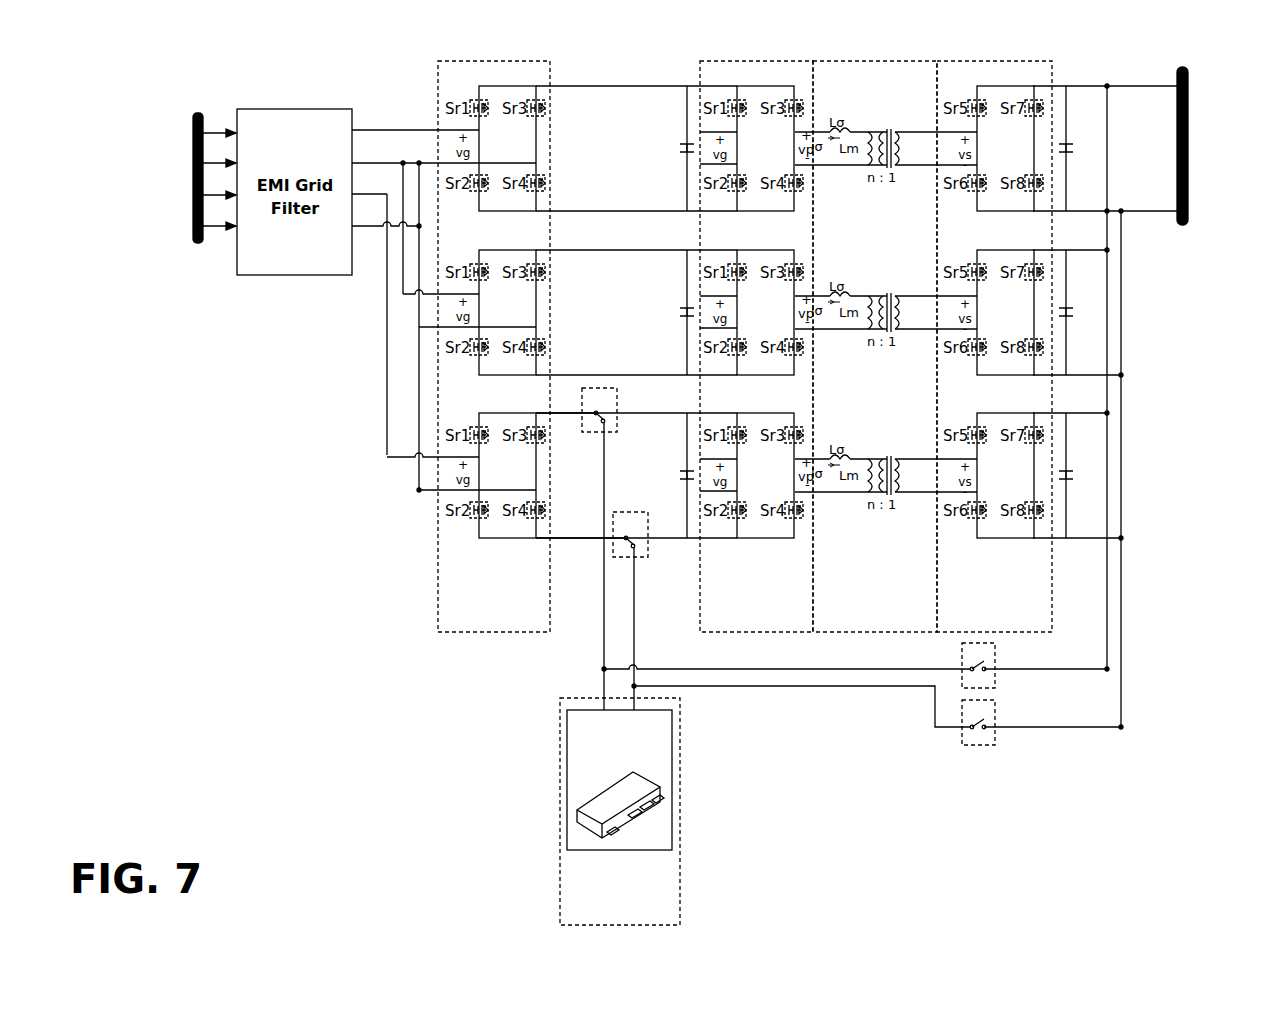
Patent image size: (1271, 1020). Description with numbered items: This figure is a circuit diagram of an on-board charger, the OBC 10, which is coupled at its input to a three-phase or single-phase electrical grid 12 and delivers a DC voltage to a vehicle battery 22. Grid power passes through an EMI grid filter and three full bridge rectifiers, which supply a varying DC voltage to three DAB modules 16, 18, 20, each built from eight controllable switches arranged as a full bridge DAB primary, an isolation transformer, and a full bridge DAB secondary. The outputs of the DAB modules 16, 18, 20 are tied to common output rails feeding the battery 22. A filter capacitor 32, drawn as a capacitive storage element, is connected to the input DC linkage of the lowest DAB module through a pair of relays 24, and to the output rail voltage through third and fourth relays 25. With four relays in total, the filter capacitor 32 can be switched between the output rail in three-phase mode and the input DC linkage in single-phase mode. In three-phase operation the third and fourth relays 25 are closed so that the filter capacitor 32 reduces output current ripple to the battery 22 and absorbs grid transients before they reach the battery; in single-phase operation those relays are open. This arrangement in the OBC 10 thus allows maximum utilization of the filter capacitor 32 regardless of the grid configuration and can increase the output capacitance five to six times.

The OBC 10 is at (399, 53).
The electrical grid 12 is at (197, 178).
The DAB module 16 is at (670, 152).
The DAB module 18 is at (670, 320).
The DAB module 20 is at (1143, 492).
The battery 22 is at (1188, 136).
The relays 24 is at (637, 512).
The third and fourth relays 25 is at (997, 720).
The filter capacitor 32 is at (560, 807).